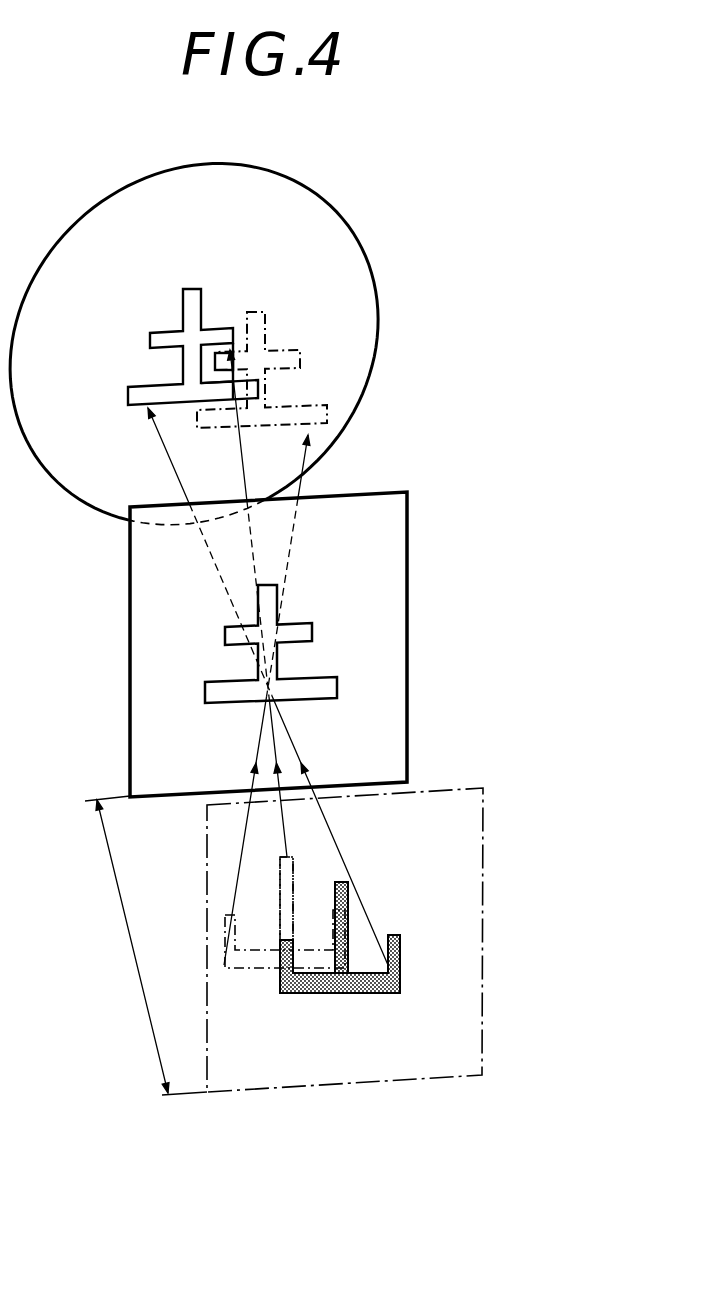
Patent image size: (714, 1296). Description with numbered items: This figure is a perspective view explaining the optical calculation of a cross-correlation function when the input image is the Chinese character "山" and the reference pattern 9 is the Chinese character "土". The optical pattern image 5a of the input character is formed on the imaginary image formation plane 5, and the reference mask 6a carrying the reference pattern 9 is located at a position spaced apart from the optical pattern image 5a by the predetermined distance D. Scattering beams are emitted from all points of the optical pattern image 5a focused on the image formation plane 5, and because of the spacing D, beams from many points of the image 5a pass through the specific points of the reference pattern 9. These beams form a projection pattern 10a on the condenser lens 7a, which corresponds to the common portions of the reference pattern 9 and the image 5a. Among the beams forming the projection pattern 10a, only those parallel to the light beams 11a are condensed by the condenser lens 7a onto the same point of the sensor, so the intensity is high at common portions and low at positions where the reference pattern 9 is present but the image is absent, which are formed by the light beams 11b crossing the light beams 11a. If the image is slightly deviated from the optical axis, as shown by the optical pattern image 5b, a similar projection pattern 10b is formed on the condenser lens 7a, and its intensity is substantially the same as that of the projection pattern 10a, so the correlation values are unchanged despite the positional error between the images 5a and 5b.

The condenser lens 7a is at (360, 247).
The projection pattern 10a is at (163, 329).
The projection pattern 10b is at (325, 405).
The reference mask 6a is at (407, 548).
The reference pattern 9 is at (337, 688).
The imaginary image formation plane 5 is at (449, 793).
The optical pattern image 5a is at (400, 942).
The optical pattern image 5b is at (225, 923).
The light beams 11a is at (340, 860).
The light beams 11b is at (293, 827).
The predetermined distance D is at (132, 955).